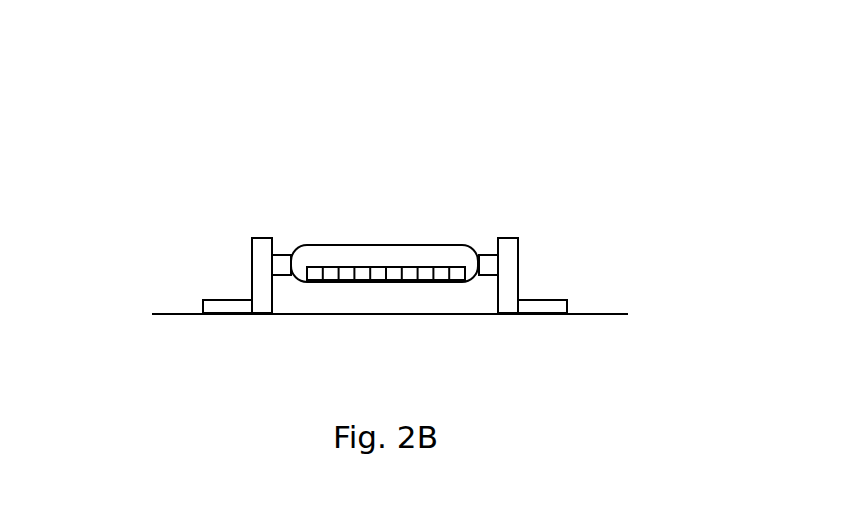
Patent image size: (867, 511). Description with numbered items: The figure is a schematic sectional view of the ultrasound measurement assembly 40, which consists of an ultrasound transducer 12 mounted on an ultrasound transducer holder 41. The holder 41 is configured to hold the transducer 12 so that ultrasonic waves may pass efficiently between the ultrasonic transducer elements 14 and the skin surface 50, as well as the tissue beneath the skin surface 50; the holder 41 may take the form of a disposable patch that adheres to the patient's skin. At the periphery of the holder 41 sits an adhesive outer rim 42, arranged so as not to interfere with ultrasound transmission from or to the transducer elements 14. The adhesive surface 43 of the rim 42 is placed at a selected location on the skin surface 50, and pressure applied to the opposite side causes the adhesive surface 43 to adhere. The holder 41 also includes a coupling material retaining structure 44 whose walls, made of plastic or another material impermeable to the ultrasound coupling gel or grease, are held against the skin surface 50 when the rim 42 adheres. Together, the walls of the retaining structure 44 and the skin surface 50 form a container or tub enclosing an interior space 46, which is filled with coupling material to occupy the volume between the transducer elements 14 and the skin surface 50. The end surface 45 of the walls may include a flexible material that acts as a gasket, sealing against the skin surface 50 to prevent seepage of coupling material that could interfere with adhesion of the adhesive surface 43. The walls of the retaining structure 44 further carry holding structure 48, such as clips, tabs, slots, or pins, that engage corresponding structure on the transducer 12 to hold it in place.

The ultrasound transducer 12 is at (397, 245).
The ultrasonic transducer elements 14 is at (353, 282).
The ultrasound measurement assembly 40 is at (190, 120).
The ultrasound transducer holder 41 is at (545, 202).
The adhesive outer rim 42 is at (210, 302).
The adhesive surface 43 is at (227, 315).
The coupling material retaining structure 44 is at (255, 262).
The end surface 45 is at (261, 315).
The interior space 46 is at (447, 300).
The holding structure 48 is at (283, 254).
The skin surface 50 is at (598, 313).